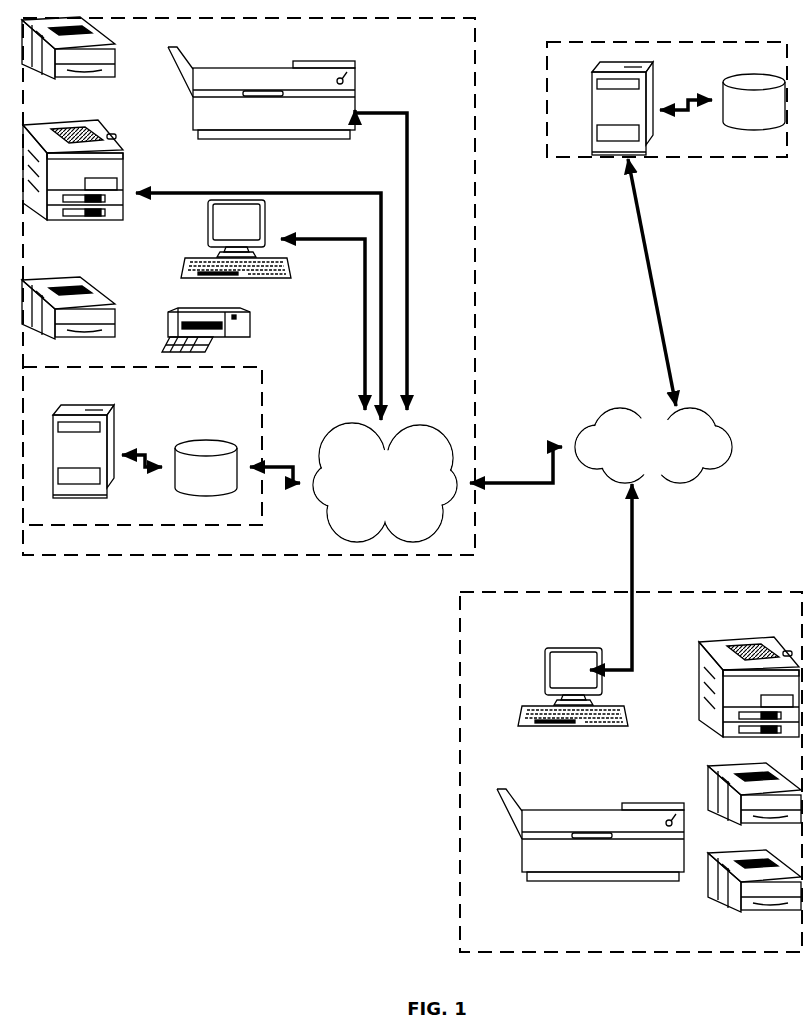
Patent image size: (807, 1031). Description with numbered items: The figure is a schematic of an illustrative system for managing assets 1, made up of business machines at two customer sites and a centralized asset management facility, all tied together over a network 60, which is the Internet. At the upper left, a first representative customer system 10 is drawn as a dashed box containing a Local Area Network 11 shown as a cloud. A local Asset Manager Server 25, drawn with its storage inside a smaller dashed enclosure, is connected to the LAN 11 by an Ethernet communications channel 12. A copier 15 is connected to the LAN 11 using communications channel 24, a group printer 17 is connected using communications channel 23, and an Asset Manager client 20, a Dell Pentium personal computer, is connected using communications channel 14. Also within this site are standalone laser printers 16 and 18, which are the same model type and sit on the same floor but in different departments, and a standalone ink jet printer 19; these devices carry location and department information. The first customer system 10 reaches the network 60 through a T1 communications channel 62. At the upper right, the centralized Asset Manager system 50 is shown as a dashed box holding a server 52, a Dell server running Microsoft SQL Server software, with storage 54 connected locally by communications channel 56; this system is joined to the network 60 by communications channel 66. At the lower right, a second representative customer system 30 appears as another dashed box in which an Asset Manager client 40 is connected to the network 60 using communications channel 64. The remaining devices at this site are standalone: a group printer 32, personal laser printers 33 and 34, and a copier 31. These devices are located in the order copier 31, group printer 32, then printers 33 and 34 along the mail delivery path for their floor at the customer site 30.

The system for managing assets 1 is at (323, 938).
The first representative customer system 10 is at (143, 570).
The Local Area Network 11 is at (385, 482).
The Ethernet communications channel 12 is at (279, 458).
The communications channel 14 is at (323, 324).
The copier 15 is at (261, 93).
The standalone laser printer 16 is at (87, 48).
The group printer 17 is at (73, 185).
The standalone laser printer 18 is at (79, 308).
The standalone ink jet printer 19 is at (220, 330).
The Asset Manager client 20 is at (231, 239).
The communications channel 23 is at (258, 296).
The communications channel 24 is at (394, 260).
The local Asset Manager Server 25 is at (142, 446).
The second representative customer system 30 is at (635, 953).
The copier 31 is at (590, 848).
The group printer 32 is at (749, 677).
The personal laser printer 33 is at (752, 784).
The personal laser printer 34 is at (754, 892).
The Asset Manager client 40 is at (570, 687).
The centralized Asset Manager system 50 is at (667, 87).
The server 52 is at (606, 108).
The storage 54 is at (754, 93).
The communications channel 56 is at (686, 93).
The network 60 is at (654, 450).
The T1 communications channel 62 is at (516, 465).
The communications channel 64 is at (627, 577).
The communications channel 66 is at (665, 282).